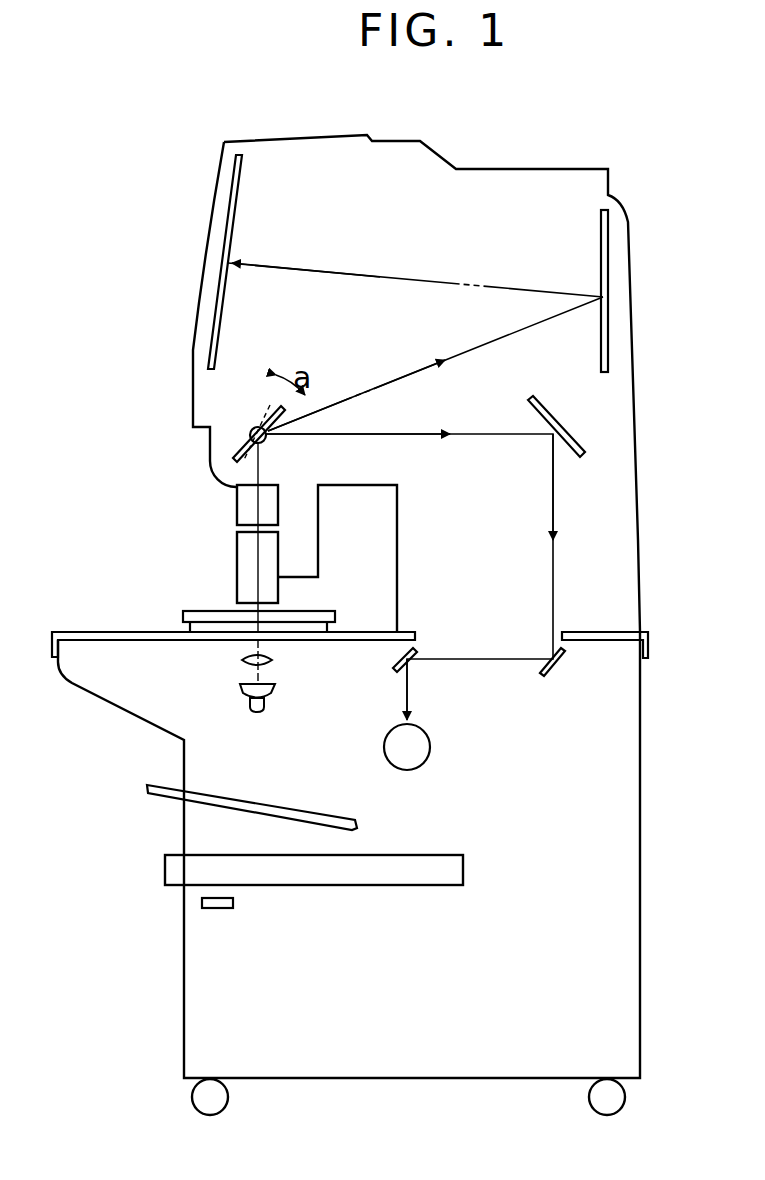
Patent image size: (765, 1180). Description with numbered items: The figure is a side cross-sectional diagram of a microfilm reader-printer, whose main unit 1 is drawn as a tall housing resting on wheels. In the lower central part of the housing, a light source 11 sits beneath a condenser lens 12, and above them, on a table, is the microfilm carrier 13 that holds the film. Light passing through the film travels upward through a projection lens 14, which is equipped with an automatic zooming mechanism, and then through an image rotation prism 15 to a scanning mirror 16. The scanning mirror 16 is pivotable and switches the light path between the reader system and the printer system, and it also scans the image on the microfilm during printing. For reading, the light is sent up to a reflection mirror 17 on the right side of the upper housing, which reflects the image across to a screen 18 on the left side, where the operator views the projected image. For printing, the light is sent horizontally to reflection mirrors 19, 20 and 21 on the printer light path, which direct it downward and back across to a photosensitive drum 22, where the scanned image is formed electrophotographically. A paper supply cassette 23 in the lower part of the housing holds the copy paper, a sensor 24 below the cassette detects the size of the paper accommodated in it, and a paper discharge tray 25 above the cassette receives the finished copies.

The main unit 1 is at (638, 532).
The light source 11 is at (266, 700).
The condenser lens 12 is at (242, 660).
The microfilm carrier 13 is at (200, 611).
The projection lens 14 is at (237, 553).
The image rotation prism 15 is at (237, 500).
The scanning mirror 16 is at (232, 460).
The reflection mirror 17 is at (605, 250).
The screen 18 is at (231, 197).
The reflection mirror 19 is at (583, 455).
The reflection mirror 20 is at (565, 670).
The reflection mirror 21 is at (395, 670).
The photosensitive drum 22 is at (428, 757).
The paper supply cassette 23 is at (165, 870).
The sensor 24 is at (220, 910).
The paper discharge tray 25 is at (153, 795).